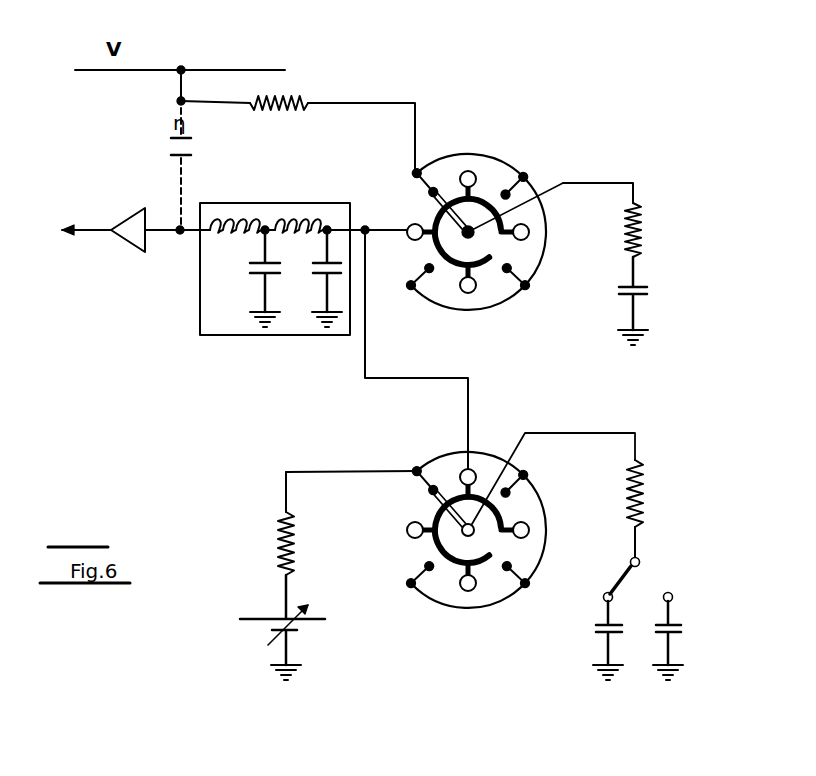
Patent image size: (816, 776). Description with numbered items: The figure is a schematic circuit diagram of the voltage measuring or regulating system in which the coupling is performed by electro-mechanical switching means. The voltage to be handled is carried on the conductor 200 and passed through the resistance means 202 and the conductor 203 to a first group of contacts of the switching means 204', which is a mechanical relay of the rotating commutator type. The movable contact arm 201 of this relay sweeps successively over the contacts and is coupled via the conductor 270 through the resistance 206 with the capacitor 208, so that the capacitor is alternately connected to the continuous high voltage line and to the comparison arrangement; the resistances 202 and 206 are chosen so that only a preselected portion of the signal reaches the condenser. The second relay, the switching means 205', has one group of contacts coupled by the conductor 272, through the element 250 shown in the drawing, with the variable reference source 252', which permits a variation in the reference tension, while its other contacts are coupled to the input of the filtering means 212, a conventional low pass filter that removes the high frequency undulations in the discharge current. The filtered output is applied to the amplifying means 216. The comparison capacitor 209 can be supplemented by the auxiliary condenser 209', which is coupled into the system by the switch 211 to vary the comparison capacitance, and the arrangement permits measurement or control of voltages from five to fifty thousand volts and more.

The conductor 200 is at (213, 70).
The resistance means 202 is at (296, 102).
The conductor 203 is at (497, 150).
The switching means 204' is at (537, 163).
The conductor 270 is at (620, 183).
The movable contact arm 201 is at (456, 232).
The resistance 206 is at (645, 240).
The capacitor 208 is at (650, 294).
The amplifying means 216 is at (137, 250).
The filtering means 212 is at (212, 287).
The conductor 272 is at (350, 466).
The resistor 250 is at (298, 572).
The variable reference source 252' is at (274, 627).
The switching means 205' is at (556, 448).
The switch 211 is at (620, 578).
The capacitor 209 is at (571, 650).
The auxiliary condenser 209' is at (695, 637).